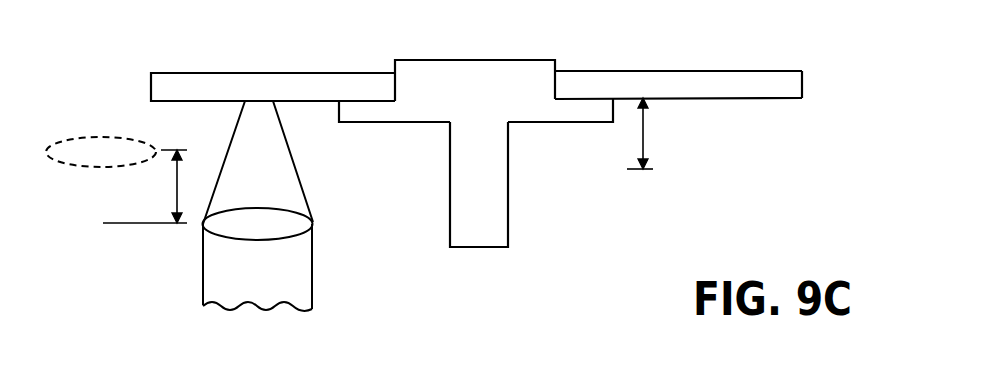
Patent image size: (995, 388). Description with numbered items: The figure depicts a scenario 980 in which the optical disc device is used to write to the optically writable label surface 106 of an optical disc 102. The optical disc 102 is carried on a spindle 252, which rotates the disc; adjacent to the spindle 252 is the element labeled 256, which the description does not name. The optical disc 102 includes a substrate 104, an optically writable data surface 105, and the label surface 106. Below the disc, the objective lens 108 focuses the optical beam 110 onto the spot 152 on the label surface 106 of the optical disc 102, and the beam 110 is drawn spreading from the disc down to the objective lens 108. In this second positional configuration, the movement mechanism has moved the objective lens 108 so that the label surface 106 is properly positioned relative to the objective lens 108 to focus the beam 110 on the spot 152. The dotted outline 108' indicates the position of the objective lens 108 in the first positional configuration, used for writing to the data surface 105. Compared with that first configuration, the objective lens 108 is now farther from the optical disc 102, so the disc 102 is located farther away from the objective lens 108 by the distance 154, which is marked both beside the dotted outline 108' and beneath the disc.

The optical disc 102 is at (513, 128).
The substrate 104 is at (725, 78).
The optically writable data surface 105 is at (790, 95).
The optically writable label surface 106 is at (747, 100).
The objective lens 108 is at (303, 221).
The objective lens position 108' is at (101, 122).
The optical beam 110 is at (278, 281).
The spot 152 is at (253, 102).
The distance 154 is at (383, 160).
The spindle 252 is at (460, 165).
The collar 256 is at (548, 107).
The scenario 980 is at (97, 242).